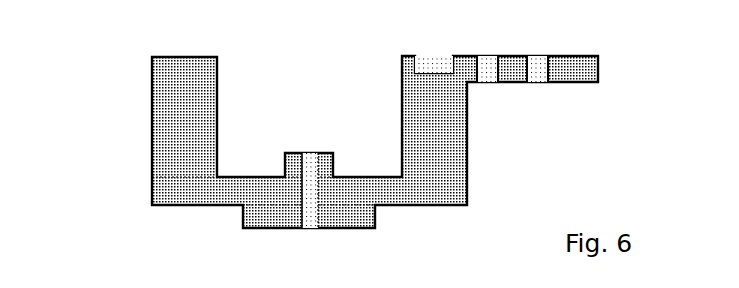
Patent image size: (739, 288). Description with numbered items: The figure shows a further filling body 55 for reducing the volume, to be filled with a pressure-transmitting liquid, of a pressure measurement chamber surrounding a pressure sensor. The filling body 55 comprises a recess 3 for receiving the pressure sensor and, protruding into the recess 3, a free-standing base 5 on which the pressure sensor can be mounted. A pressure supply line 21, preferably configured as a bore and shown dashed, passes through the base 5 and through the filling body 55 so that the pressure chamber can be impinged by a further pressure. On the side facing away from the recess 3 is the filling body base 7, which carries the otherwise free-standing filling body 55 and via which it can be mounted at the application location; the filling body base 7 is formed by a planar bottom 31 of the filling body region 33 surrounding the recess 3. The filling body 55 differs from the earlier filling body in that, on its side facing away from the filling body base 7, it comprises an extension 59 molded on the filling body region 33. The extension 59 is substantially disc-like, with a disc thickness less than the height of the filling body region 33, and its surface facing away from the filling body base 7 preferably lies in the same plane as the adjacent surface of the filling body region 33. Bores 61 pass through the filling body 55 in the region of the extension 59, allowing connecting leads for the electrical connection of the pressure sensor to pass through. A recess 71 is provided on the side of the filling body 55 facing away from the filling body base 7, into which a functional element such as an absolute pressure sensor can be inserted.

The recess 3 is at (312, 119).
The base 5 is at (328, 165).
The filling body base 7 is at (343, 217).
The pressure supply line 21 is at (307, 193).
The planar bottom 31 is at (367, 192).
The filling body region 33 is at (172, 158).
The filling body 55 is at (120, 92).
The extension 59 is at (577, 65).
The bores 61 is at (487, 72).
The recess 71 is at (437, 65).